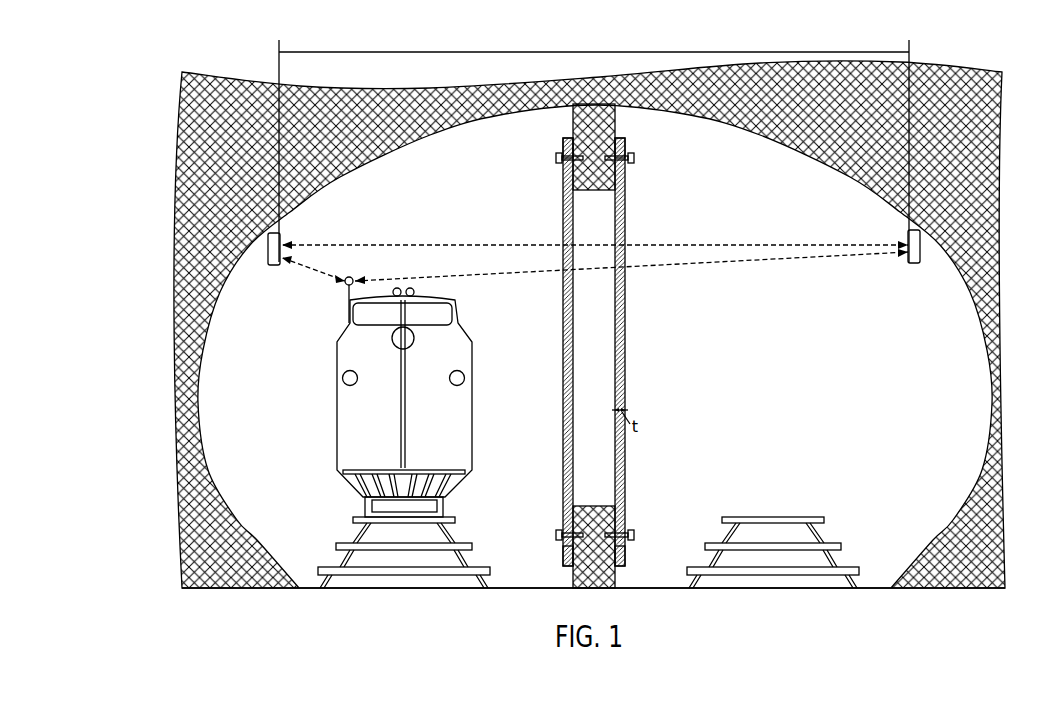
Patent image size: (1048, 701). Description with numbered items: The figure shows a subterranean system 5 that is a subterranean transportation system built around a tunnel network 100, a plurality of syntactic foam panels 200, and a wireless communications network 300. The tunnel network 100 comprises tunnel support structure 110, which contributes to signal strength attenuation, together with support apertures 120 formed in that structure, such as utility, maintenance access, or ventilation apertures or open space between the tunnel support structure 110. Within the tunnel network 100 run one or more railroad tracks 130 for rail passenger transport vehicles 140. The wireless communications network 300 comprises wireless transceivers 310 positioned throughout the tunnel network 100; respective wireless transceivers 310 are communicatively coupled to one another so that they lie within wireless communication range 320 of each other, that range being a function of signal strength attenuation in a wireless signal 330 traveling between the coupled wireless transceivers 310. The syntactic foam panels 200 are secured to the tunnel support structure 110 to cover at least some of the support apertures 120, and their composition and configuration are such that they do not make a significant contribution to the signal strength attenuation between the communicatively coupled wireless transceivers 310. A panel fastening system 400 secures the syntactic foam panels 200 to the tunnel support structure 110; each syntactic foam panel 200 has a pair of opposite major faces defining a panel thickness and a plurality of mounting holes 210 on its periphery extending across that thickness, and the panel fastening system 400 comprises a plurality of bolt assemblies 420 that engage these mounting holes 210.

The subterranean system 5 is at (168, 112).
The tunnel network 100 is at (198, 400).
The tunnel support structure 110 is at (620, 130).
The support apertures 120 is at (604, 386).
The railroad tracks 130 is at (470, 547).
The rail passenger transport vehicles 140 is at (473, 430).
The syntactic foam panels 200 is at (563, 350).
The mounting holes 210 is at (565, 143).
The wireless communications network 300 is at (382, 219).
The wireless transceivers 310 is at (274, 266).
The wireless communication range 320 is at (572, 52).
The wireless signal 330 is at (457, 244).
The panel fastening system 400 is at (605, 337).
The bolt assemblies 420 is at (557, 159).